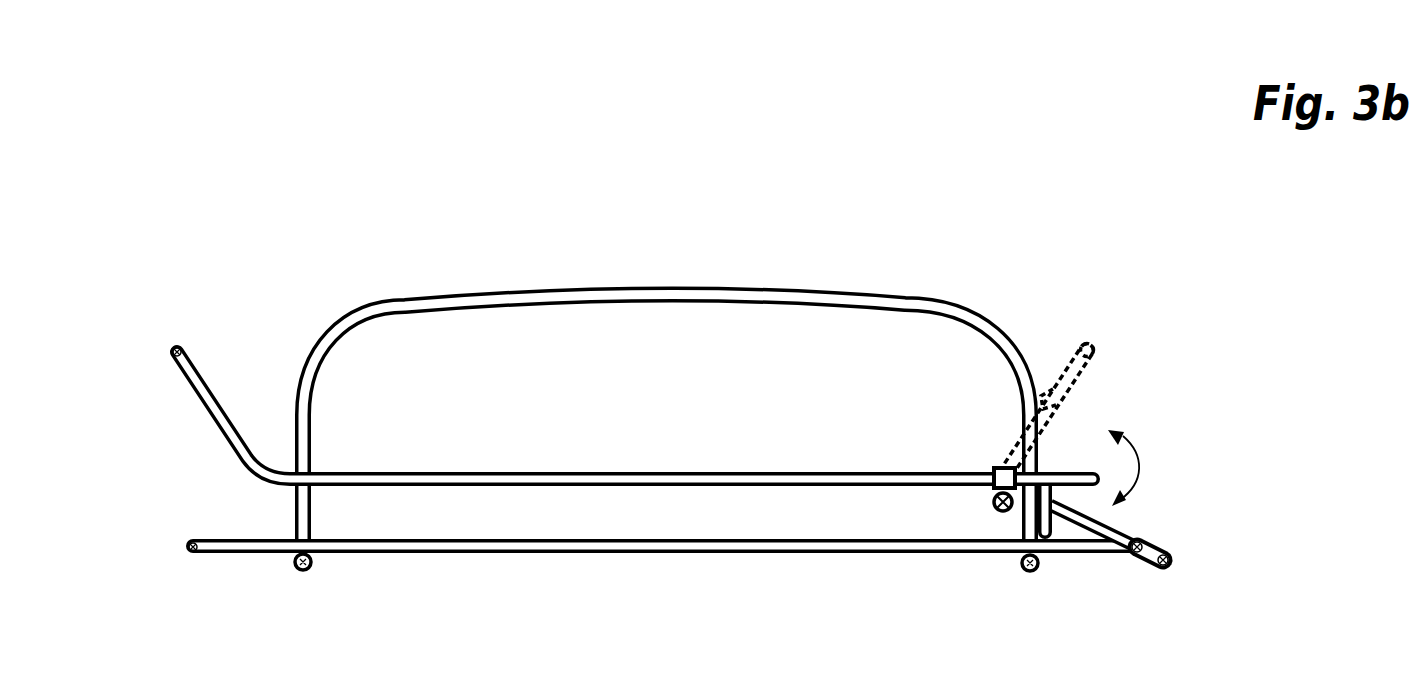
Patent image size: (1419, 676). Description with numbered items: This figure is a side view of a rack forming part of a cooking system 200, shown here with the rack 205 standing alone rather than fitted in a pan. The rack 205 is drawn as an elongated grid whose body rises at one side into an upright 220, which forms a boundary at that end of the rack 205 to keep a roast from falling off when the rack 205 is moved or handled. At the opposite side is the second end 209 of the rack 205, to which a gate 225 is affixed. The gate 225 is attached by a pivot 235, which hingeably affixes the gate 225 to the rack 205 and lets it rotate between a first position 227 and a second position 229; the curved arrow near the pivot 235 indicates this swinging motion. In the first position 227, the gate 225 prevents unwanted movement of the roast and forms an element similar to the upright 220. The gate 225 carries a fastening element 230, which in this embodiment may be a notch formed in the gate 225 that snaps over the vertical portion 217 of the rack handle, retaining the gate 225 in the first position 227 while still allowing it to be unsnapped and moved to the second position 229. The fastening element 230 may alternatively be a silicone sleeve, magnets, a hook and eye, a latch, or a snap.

The system 200 is at (207, 114).
The floating rack 205 is at (610, 279).
The second end 209 is at (1100, 477).
The vertical portion 217 is at (1027, 442).
The upright 220 is at (177, 344).
The gate 225 is at (1087, 363).
The first position 227 is at (1135, 262).
The second position 229 is at (1173, 560).
The fastening element 230 is at (1047, 393).
The pivot 235 is at (1001, 506).